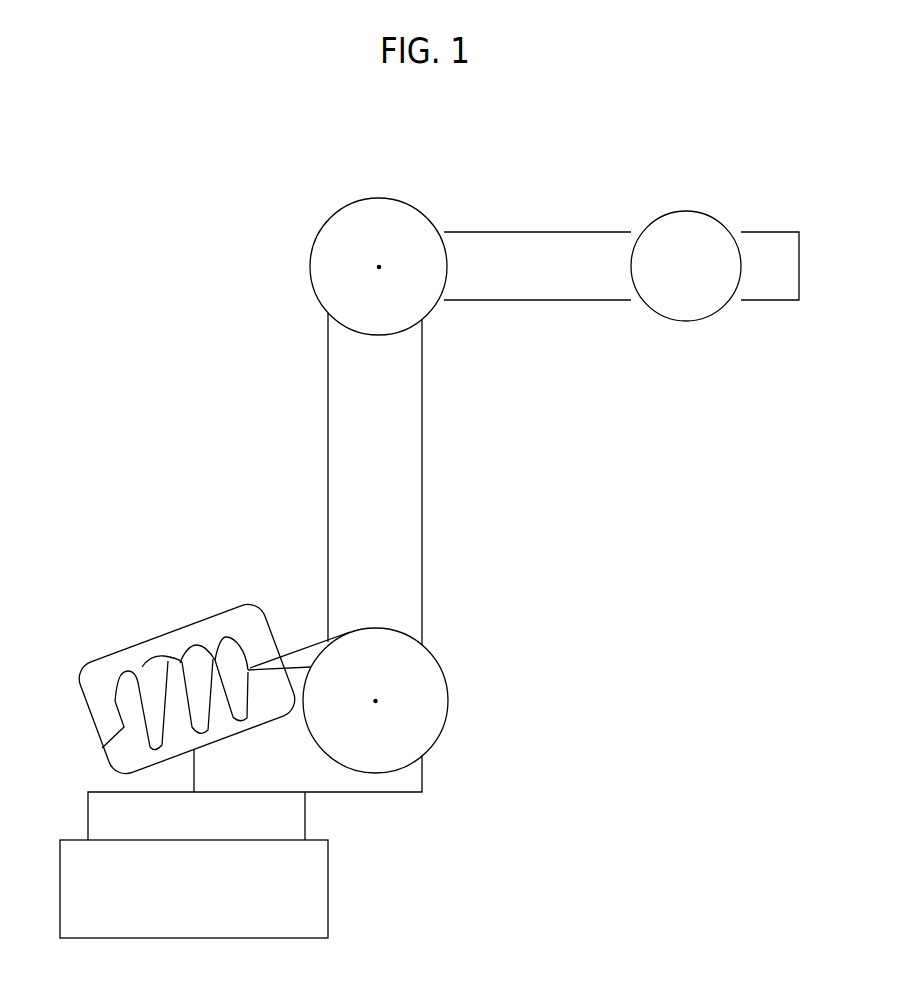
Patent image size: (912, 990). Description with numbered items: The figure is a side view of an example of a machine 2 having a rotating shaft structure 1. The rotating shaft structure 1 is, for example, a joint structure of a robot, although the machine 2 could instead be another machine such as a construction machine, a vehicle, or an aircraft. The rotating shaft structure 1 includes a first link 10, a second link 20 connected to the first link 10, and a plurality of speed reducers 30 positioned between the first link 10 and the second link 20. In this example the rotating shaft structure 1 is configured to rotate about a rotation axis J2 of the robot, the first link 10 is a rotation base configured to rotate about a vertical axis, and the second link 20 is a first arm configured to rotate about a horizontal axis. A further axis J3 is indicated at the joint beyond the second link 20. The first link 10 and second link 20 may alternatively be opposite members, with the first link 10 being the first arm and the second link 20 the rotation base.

The rotating shaft structure 1 is at (462, 660).
The machine 2 is at (277, 387).
The first link 10 is at (398, 780).
The second link 20 is at (400, 513).
The speed reducers 30 is at (433, 705).
The rotation axis J2 is at (375, 701).
The joint axis J3 is at (379, 266).